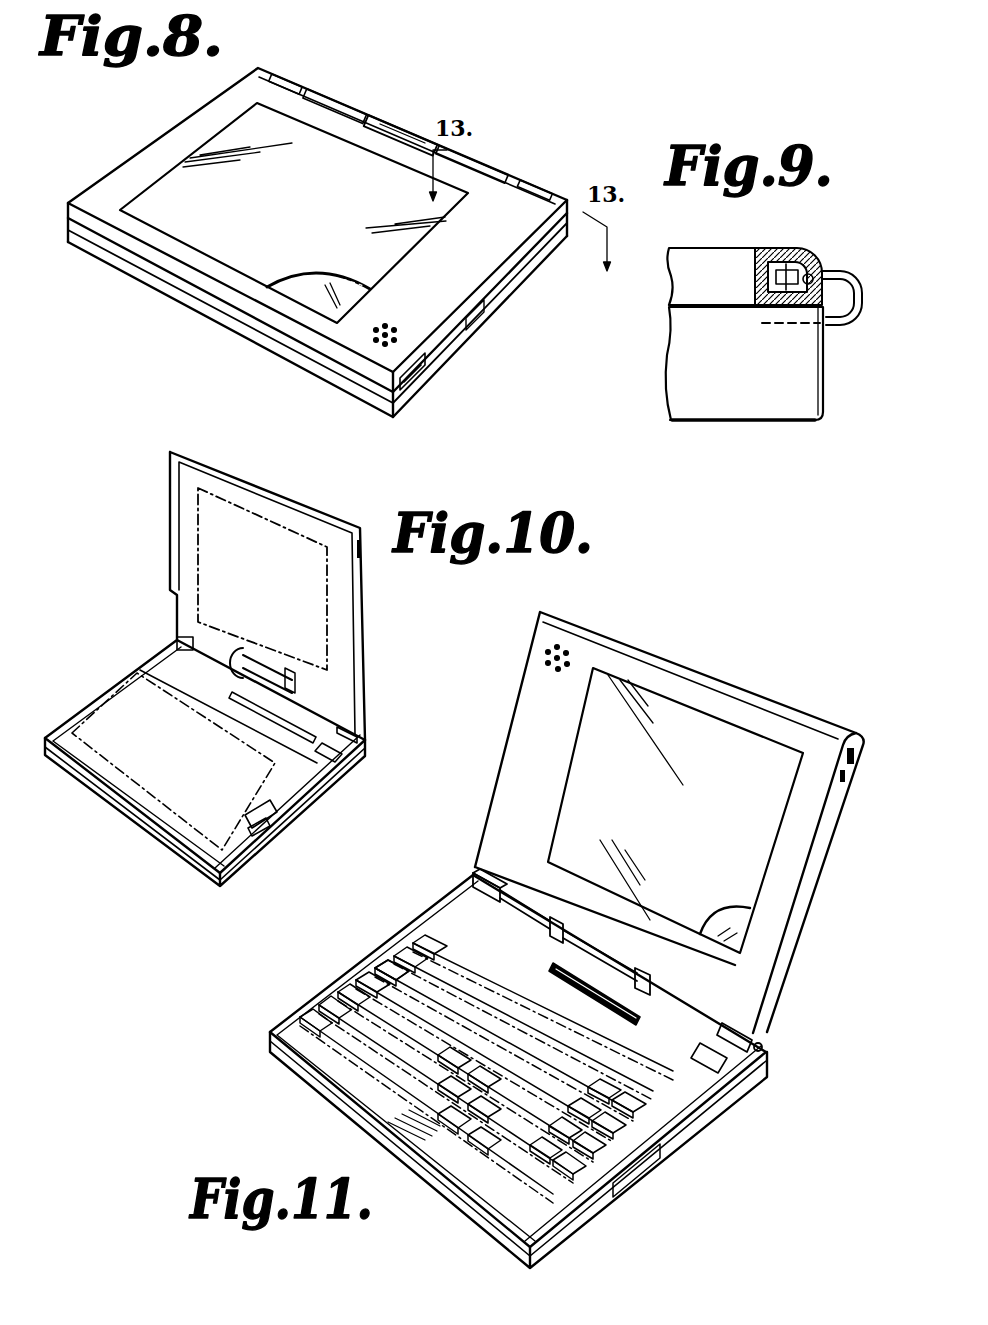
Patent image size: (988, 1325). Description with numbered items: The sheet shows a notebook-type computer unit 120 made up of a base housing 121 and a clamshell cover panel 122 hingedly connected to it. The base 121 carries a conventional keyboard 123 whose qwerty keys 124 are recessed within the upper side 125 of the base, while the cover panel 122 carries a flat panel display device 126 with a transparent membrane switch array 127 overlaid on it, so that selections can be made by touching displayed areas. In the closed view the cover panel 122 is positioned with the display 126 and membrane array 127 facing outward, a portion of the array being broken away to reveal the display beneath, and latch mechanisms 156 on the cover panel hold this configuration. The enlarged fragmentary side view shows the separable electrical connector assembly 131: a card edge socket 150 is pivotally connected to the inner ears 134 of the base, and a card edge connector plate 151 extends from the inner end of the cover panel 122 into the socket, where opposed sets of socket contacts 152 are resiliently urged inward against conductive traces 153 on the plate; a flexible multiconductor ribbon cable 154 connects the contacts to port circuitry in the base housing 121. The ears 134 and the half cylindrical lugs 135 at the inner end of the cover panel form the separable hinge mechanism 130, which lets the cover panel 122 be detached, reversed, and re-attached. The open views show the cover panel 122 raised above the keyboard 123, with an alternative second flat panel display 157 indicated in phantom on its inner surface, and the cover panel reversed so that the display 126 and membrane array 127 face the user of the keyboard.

In FIG. 8, the computer unit 120 is at (294, 61).
In FIG. 10, the computer unit 120 is at (134, 580).
In FIG. 11, the computer unit 120 is at (687, 653).
In FIG. 8, the base housing 121 is at (147, 275).
In FIG. 9, the base housing 121 is at (733, 407).
In FIG. 10, the base housing 121 is at (173, 853).
In FIG. 11, the base housing 121 is at (268, 1043).
In FIG. 8, the cover panel 122 is at (120, 165).
In FIG. 9, the cover panel 122 is at (690, 255).
In FIG. 10, the cover panel 122 is at (363, 633).
In FIG. 11, the cover panel 122 is at (508, 722).
In FIG. 10, the keyboard 123 is at (105, 695).
In FIG. 11, the keyboard 123 is at (328, 988).
In FIG. 10, the keys 124 is at (250, 810).
In FIG. 11, the keys 124 is at (360, 973).
In FIG. 9, the upper side 125 is at (675, 305).
In FIG. 10, the upper side 125 is at (320, 760).
In FIG. 11, the upper side 125 is at (445, 913).
In FIG. 8, the flat panel display device 126 is at (295, 290).
In FIG. 11, the flat panel display device 126 is at (719, 925).
In FIG. 8, the membrane switch array 127 is at (387, 258).
In FIG. 11, the membrane switch array 127 is at (573, 793).
In FIG. 11, the separable hinge mechanism 130 is at (733, 1023).
In FIG. 9, the separable electrical connector assembly 131 is at (786, 242).
In FIG. 11, the separable electrical connector assembly 131 is at (632, 952).
In FIG. 11, the upstanding ears 134 is at (484, 873).
In FIG. 11, the half cylindrical lugs 135 is at (533, 922).
In FIG. 8, the card edge socket 150 is at (385, 122).
In FIG. 9, the card edge socket 150 is at (777, 247).
In FIG. 10, the card edge socket 150 is at (222, 668).
In FIG. 11, the card edge socket 150 is at (590, 942).
In FIG. 9, the card edge connector plate 151 is at (753, 277).
In FIG. 9, the socket contacts 152 is at (810, 258).
In FIG. 9, the conductive traces 153 is at (762, 323).
In FIG. 9, the flexible multiconductor ribbon cable 154 is at (835, 330).
In FIG. 8, the latch mechanisms 156 is at (423, 368).
In FIG. 11, the latch mechanisms 156 is at (838, 765).
In FIG. 10, the second flat panel display 157 is at (258, 513).